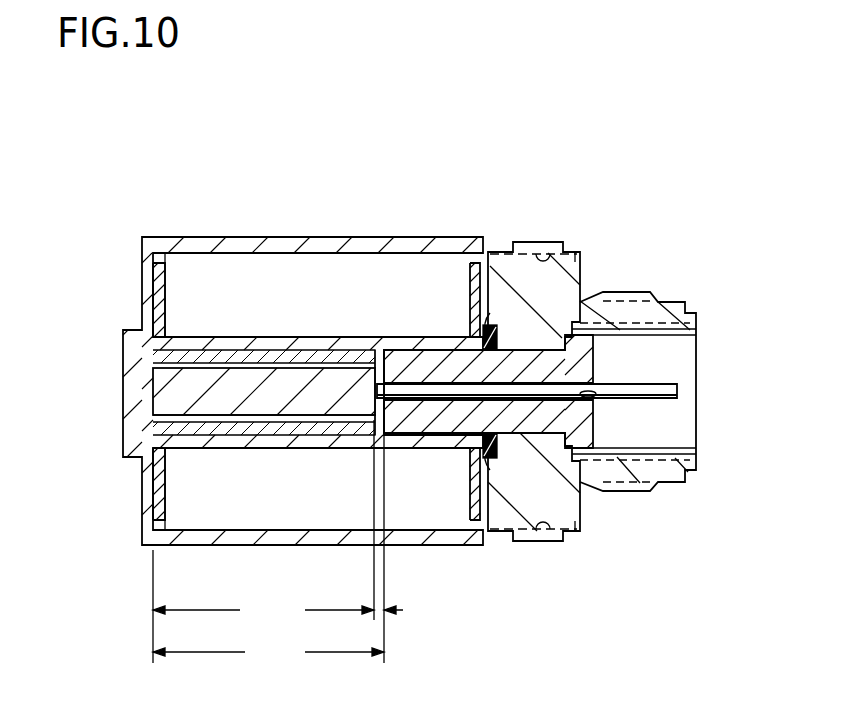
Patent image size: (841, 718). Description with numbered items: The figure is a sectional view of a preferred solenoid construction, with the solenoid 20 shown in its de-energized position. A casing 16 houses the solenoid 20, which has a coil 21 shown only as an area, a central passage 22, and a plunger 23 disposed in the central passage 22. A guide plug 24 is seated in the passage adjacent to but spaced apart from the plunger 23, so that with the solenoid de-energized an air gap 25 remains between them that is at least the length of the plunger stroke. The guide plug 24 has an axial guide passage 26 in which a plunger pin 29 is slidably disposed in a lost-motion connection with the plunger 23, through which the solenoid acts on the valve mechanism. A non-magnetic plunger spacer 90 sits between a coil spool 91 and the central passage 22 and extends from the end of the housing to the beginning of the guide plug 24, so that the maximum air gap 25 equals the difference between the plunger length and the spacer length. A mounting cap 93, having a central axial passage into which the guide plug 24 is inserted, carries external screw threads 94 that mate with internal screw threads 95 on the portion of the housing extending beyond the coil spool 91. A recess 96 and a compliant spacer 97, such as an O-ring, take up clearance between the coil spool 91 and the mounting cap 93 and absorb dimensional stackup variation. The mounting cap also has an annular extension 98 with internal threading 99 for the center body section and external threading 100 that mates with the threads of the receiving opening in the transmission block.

The solenoid 20 is at (363, 218).
The casing 16 is at (194, 237).
The coil 21 is at (297, 312).
The central passage 22 is at (282, 366).
The plunger 23 is at (336, 400).
The guide plug 24 is at (560, 360).
The air gap 25 is at (378, 350).
The axial guide passage 26 is at (606, 399).
The plunger pin 29 is at (679, 392).
The plunger spacer 90 is at (307, 446).
The coil spool 91 is at (160, 294).
The mounting cap 93 is at (539, 482).
The external screw threads 94 is at (575, 251).
The internal screw threads 95 is at (517, 241).
The recess 96 is at (488, 328).
The compliant spacer 97 is at (495, 343).
The annular extension 98 is at (650, 308).
The internal threading 99 is at (672, 331).
The external threading 100 is at (636, 300).